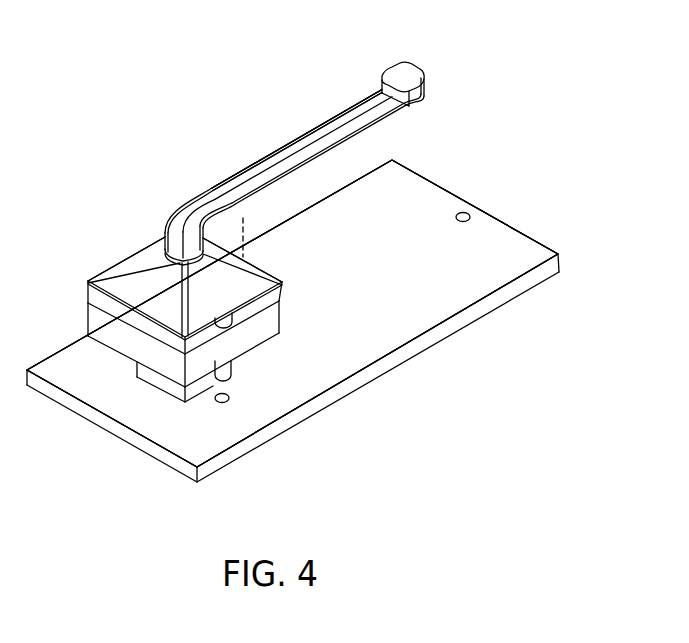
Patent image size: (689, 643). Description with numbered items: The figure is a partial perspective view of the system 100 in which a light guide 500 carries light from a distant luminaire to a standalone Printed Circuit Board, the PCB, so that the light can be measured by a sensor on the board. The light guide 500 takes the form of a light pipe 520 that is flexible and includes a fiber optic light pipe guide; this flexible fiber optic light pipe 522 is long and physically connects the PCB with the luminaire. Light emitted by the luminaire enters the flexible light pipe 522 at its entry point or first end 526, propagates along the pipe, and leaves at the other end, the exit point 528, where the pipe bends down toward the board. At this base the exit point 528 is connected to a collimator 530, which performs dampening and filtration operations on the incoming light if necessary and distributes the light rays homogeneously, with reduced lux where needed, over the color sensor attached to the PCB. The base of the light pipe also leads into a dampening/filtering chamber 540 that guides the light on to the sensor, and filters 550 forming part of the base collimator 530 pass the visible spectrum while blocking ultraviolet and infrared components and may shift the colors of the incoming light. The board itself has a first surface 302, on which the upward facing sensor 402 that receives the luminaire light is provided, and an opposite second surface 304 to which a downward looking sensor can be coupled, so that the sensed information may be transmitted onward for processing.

The system 100 is at (122, 80).
The first surface of the PCB 302 is at (417, 190).
The second surface of the PCB 304 is at (393, 368).
The standalone Printed Circuit Board PCB is at (537, 260).
The upward facing sensor 402 is at (157, 384).
The light guide 500 is at (200, 147).
The light pipe 520 is at (305, 135).
The flexible fiber optic light pipe 522 is at (260, 161).
The first end 526 is at (401, 62).
The second end 528 is at (163, 254).
The collimator 530 is at (124, 252).
The dampening/filtering chamber 540 is at (127, 290).
The filters 550 is at (95, 325).